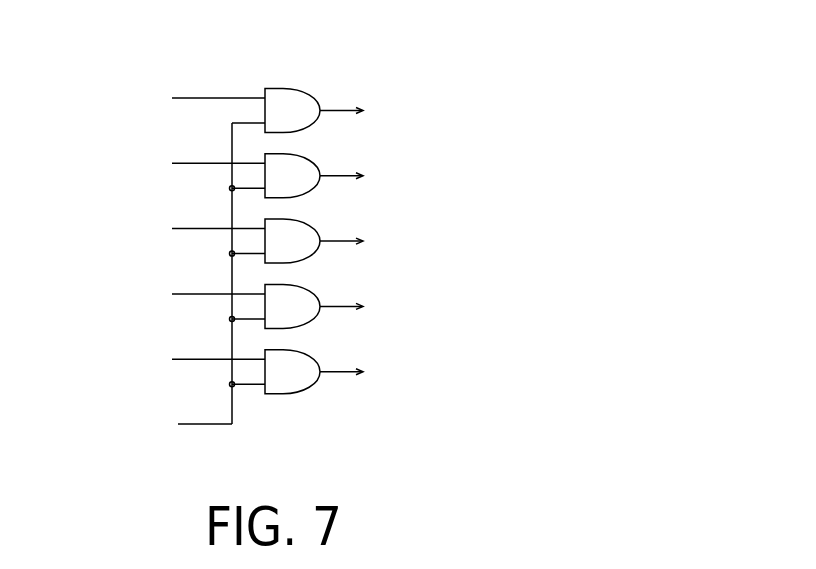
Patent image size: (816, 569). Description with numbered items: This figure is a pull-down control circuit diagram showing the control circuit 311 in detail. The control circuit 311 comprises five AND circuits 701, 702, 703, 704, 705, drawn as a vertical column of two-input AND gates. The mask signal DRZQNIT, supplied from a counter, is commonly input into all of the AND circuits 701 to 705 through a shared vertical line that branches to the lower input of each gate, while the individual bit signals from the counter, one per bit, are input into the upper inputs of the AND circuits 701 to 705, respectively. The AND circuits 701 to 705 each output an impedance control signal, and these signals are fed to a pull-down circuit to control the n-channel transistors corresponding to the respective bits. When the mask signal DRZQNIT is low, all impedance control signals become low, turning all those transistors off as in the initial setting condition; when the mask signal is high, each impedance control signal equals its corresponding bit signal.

The control circuit 311 is at (438, 37).
The AND circuit 701 is at (313, 92).
The AND circuit 702 is at (313, 157).
The AND circuit 703 is at (313, 222).
The AND circuit 704 is at (313, 287).
The AND circuit 705 is at (313, 353).